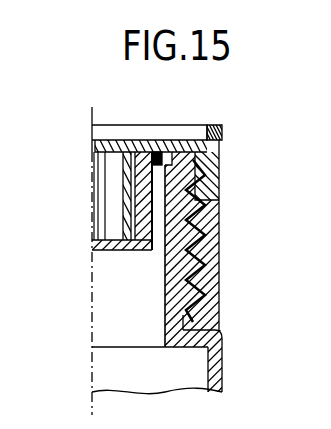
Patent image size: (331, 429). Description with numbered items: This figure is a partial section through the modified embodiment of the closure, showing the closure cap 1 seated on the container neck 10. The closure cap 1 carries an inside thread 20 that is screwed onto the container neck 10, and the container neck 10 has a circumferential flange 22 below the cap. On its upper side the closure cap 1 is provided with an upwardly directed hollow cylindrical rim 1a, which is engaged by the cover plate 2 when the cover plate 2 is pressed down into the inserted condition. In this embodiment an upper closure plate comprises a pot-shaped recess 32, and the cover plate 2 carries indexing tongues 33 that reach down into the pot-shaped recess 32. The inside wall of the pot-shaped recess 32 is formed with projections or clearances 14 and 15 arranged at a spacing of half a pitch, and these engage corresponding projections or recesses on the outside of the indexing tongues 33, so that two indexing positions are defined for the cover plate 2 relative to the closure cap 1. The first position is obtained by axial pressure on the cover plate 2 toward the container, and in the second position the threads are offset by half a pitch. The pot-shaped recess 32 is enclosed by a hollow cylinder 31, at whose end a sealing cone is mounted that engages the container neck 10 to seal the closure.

The closure cap 1 is at (219, 222).
The hollow cylindrical rim 1a is at (222, 128).
The cover plate 2 is at (147, 139).
The container neck 10 is at (165, 320).
The projection or recess 14 is at (130, 212).
The projection or recess 15 is at (140, 250).
The inside thread 20 is at (205, 270).
The circumferential flange 22 is at (222, 346).
The hollow cylinder 31 is at (195, 190).
The pot-shaped recess 32 is at (107, 248).
The indexing tongue 33 is at (120, 166).